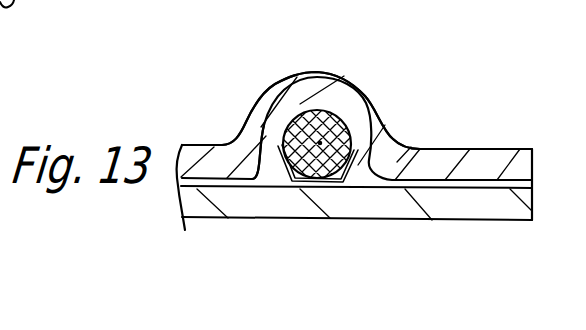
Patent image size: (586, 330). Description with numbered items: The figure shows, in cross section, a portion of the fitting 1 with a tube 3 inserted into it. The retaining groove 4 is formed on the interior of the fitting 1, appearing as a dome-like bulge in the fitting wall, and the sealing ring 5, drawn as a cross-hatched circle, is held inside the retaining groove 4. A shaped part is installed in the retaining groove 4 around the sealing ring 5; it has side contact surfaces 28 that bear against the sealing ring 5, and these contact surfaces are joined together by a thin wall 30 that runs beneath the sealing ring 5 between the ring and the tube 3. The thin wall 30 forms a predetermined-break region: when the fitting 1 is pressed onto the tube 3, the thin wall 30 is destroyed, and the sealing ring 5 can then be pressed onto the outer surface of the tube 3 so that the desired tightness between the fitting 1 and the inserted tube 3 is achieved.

The fitting 1 is at (448, 125).
The side contact surface 28 is at (377, 103).
The tube 3 is at (392, 205).
The retaining groove 4 is at (271, 168).
The sealing ring 5 is at (320, 144).
The thin wall 30 is at (343, 181).